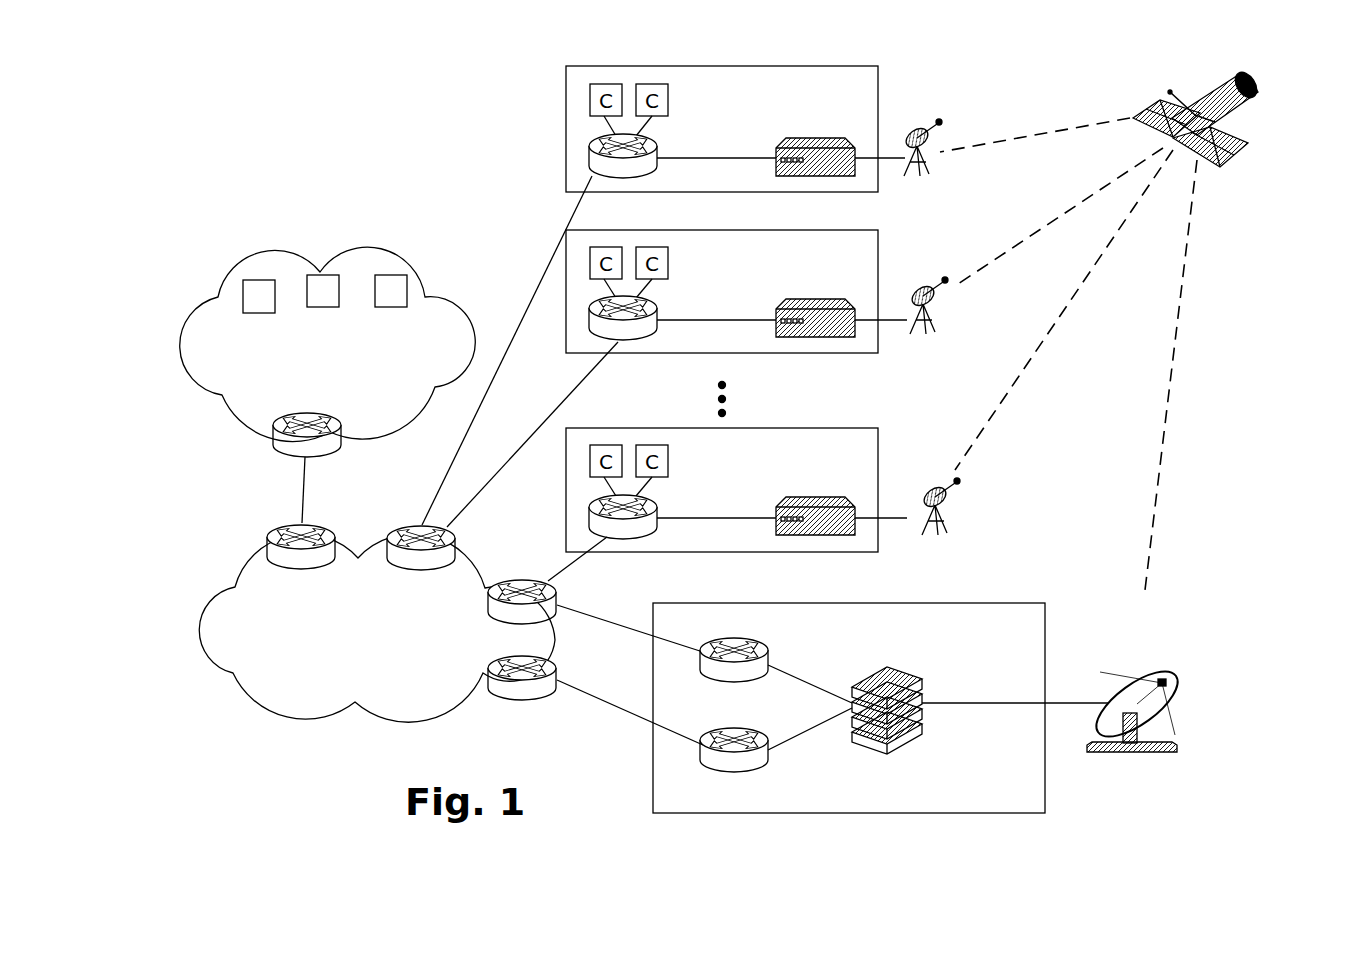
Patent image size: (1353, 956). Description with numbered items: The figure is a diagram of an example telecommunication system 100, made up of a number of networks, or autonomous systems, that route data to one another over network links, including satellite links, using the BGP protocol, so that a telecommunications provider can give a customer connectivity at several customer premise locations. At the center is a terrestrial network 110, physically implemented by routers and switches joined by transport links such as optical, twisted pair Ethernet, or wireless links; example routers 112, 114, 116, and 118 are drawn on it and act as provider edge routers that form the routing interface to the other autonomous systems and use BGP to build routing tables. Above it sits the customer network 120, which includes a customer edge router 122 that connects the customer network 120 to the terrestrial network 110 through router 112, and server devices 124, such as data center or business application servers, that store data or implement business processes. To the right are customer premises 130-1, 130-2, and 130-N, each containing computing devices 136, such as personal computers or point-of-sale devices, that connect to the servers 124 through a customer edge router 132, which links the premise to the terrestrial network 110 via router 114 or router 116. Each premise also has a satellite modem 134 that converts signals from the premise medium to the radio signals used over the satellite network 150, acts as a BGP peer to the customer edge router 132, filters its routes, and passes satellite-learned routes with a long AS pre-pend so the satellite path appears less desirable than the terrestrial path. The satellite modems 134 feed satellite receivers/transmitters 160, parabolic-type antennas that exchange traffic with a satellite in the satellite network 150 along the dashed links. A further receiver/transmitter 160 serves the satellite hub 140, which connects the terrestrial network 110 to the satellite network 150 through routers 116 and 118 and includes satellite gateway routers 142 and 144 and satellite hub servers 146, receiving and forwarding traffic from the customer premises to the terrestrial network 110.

The telecommunication system 100 is at (238, 104).
The terrestrial network 110 is at (202, 597).
The router 112 is at (266, 534).
The router 114 is at (395, 534).
The router 116 is at (522, 581).
The router 118 is at (533, 703).
The customer network 120 is at (193, 386).
The customer edge router 122 is at (282, 452).
The server devices 124 is at (265, 280).
The customer premise 130-1 is at (878, 68).
The customer premise 130-2 is at (878, 232).
The customer premise 130-N is at (878, 430).
The customer edge router 132 is at (590, 152).
The satellite modem 134 is at (782, 145).
The computing devices 136 is at (590, 97).
The satellite hub 140 is at (978, 603).
The satellite gateway router 142 is at (718, 642).
The satellite gateway router 144 is at (768, 758).
The satellite hub servers 146 is at (893, 663).
The satellite network 150 is at (1143, 107).
The satellite receivers/transmitters 160 is at (928, 164).